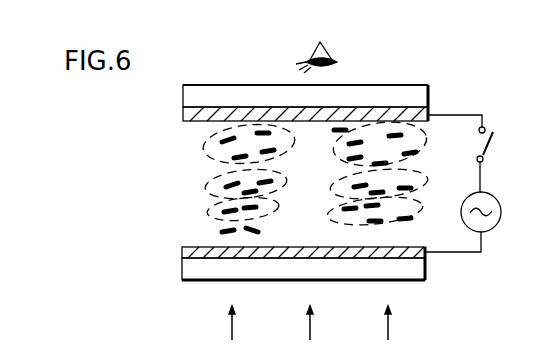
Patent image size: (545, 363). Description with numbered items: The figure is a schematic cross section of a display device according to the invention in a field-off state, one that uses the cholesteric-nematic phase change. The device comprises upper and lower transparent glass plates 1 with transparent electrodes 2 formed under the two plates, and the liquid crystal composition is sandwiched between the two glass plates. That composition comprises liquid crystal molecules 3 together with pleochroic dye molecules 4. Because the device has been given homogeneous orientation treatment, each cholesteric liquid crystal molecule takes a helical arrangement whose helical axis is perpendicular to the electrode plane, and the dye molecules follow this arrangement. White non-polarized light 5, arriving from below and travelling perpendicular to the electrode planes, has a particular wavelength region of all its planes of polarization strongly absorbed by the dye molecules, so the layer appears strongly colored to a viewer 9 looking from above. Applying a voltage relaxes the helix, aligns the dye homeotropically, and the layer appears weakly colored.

The transparent glass plate 1 is at (183, 97).
The transparent electrode 2 is at (183, 116).
The liquid crystal molecules 3 is at (205, 163).
The pleochroic dye molecules 4 is at (263, 131).
The incident light 5 is at (230, 327).
The viewer 9 is at (335, 58).